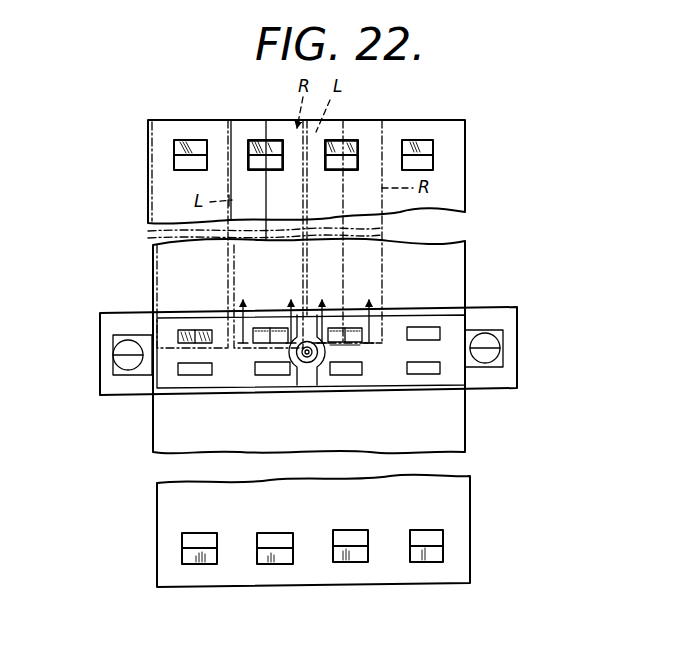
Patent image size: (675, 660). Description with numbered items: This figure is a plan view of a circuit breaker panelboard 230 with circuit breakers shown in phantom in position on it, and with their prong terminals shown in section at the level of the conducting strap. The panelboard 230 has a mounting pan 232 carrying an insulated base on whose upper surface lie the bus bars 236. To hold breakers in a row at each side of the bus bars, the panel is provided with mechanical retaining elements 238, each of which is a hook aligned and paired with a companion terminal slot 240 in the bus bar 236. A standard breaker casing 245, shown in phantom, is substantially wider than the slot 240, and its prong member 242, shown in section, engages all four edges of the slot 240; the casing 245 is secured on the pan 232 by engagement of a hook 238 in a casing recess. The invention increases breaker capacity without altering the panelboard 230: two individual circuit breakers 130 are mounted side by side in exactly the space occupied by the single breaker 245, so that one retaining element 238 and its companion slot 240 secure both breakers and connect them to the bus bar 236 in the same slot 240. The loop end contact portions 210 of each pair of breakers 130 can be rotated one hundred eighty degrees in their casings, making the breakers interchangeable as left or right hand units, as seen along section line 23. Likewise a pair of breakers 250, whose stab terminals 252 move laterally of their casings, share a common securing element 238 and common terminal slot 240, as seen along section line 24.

The mechanical retaining element 238 is at (182, 145).
The circuit breaker 130 is at (281, 127).
The circuit breaker 250 is at (360, 129).
The circuit breaker casing 245 is at (153, 195).
The prong member 242 is at (202, 330).
The section line 23 is at (269, 310).
The section line 24 is at (346, 310).
The stab terminal 252 is at (351, 346).
The terminal slot 240 is at (190, 378).
The loop end contact portion 210 is at (257, 345).
The bus bar 236 is at (265, 378).
The mounting pan 232 is at (455, 402).
The circuit breaker panelboard 230 is at (470, 437).